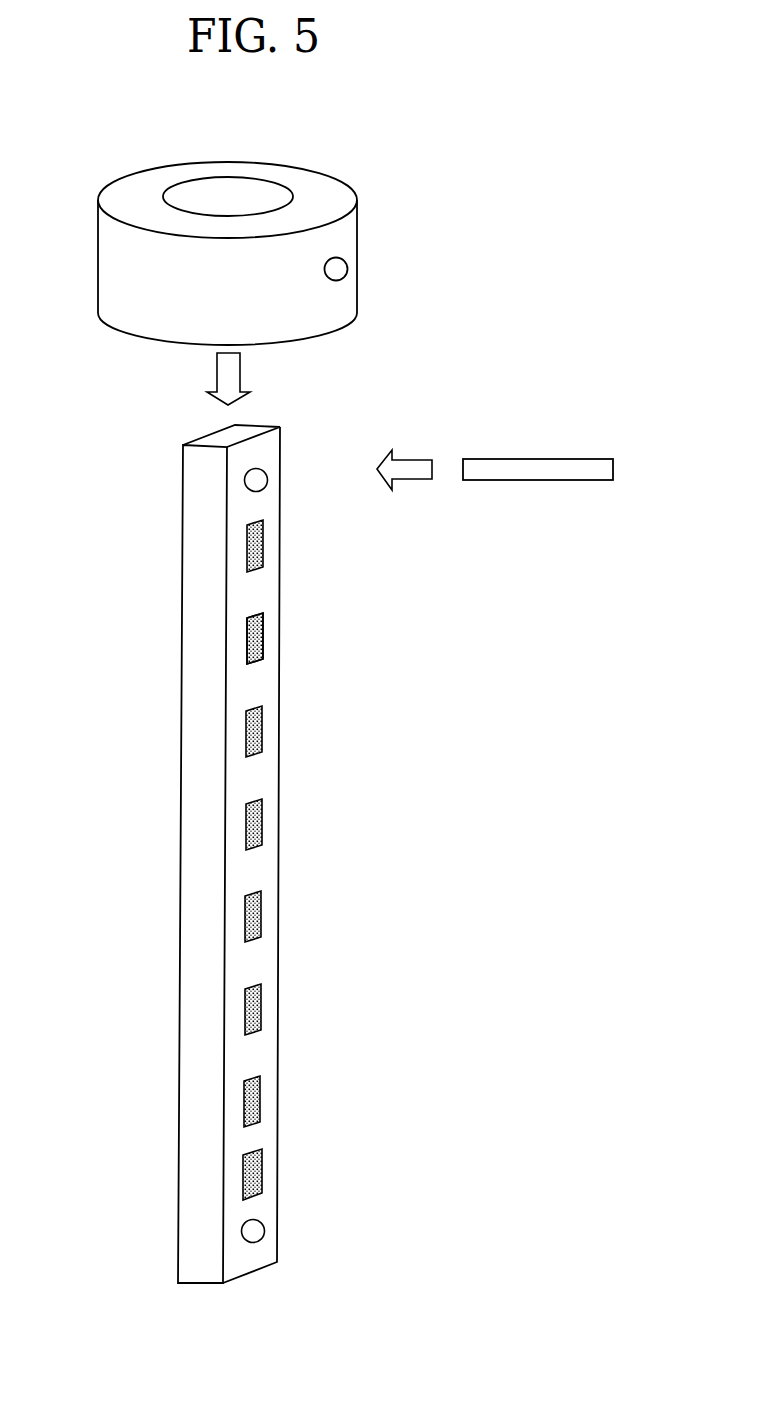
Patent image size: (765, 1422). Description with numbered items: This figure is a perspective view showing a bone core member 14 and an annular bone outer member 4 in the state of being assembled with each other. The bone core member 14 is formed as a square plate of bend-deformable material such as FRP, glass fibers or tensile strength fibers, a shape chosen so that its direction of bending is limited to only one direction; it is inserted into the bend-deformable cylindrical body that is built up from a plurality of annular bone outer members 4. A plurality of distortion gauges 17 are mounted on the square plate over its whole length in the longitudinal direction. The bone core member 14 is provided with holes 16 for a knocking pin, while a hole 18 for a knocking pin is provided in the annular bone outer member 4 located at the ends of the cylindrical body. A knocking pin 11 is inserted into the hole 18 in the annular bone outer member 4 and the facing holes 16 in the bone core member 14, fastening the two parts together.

The annular bone outer member 4 is at (118, 248).
The hole for a knocking pin 18 is at (343, 266).
The bone core member 14 is at (219, 854).
The holes for a knocking pin 16 is at (262, 483).
The distortion gauges 17 is at (267, 635).
The knocking pin 11 is at (500, 472).